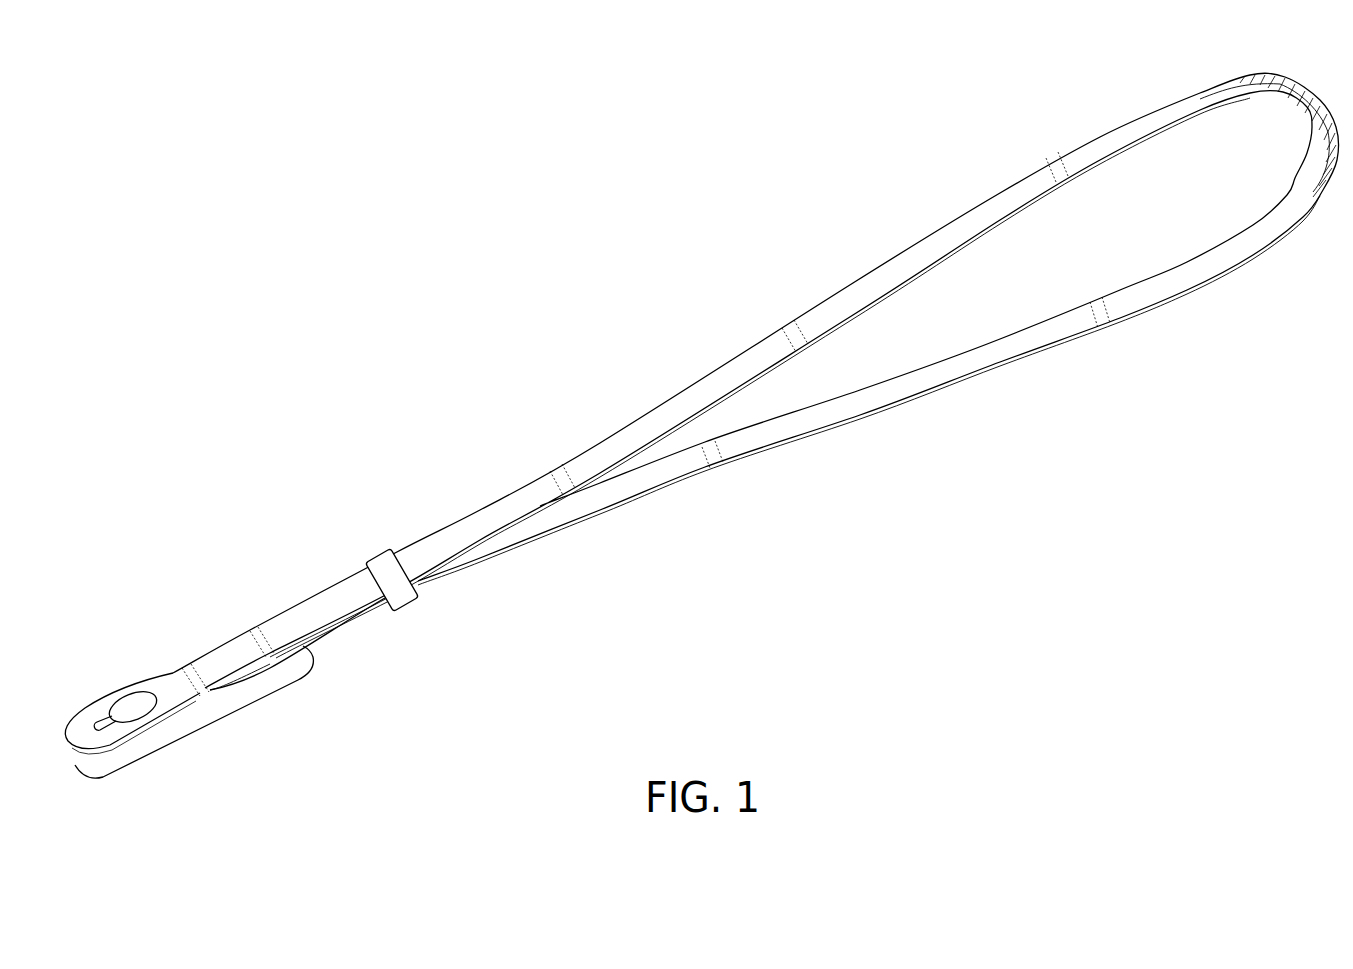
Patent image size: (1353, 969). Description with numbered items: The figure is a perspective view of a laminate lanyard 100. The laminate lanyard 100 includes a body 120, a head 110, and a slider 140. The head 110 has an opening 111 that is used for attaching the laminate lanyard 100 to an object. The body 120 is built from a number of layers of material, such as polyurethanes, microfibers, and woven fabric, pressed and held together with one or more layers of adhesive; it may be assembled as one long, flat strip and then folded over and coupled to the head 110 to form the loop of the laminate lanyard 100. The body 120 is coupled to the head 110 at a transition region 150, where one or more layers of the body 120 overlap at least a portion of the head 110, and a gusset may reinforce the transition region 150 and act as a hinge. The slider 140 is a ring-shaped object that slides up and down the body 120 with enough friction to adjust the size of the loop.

The laminate lanyard 100 is at (534, 412).
The head 110 is at (100, 702).
The opening 111 is at (153, 698).
The body 120 is at (833, 297).
The slider 140 is at (378, 553).
The transition region 150 is at (207, 728).